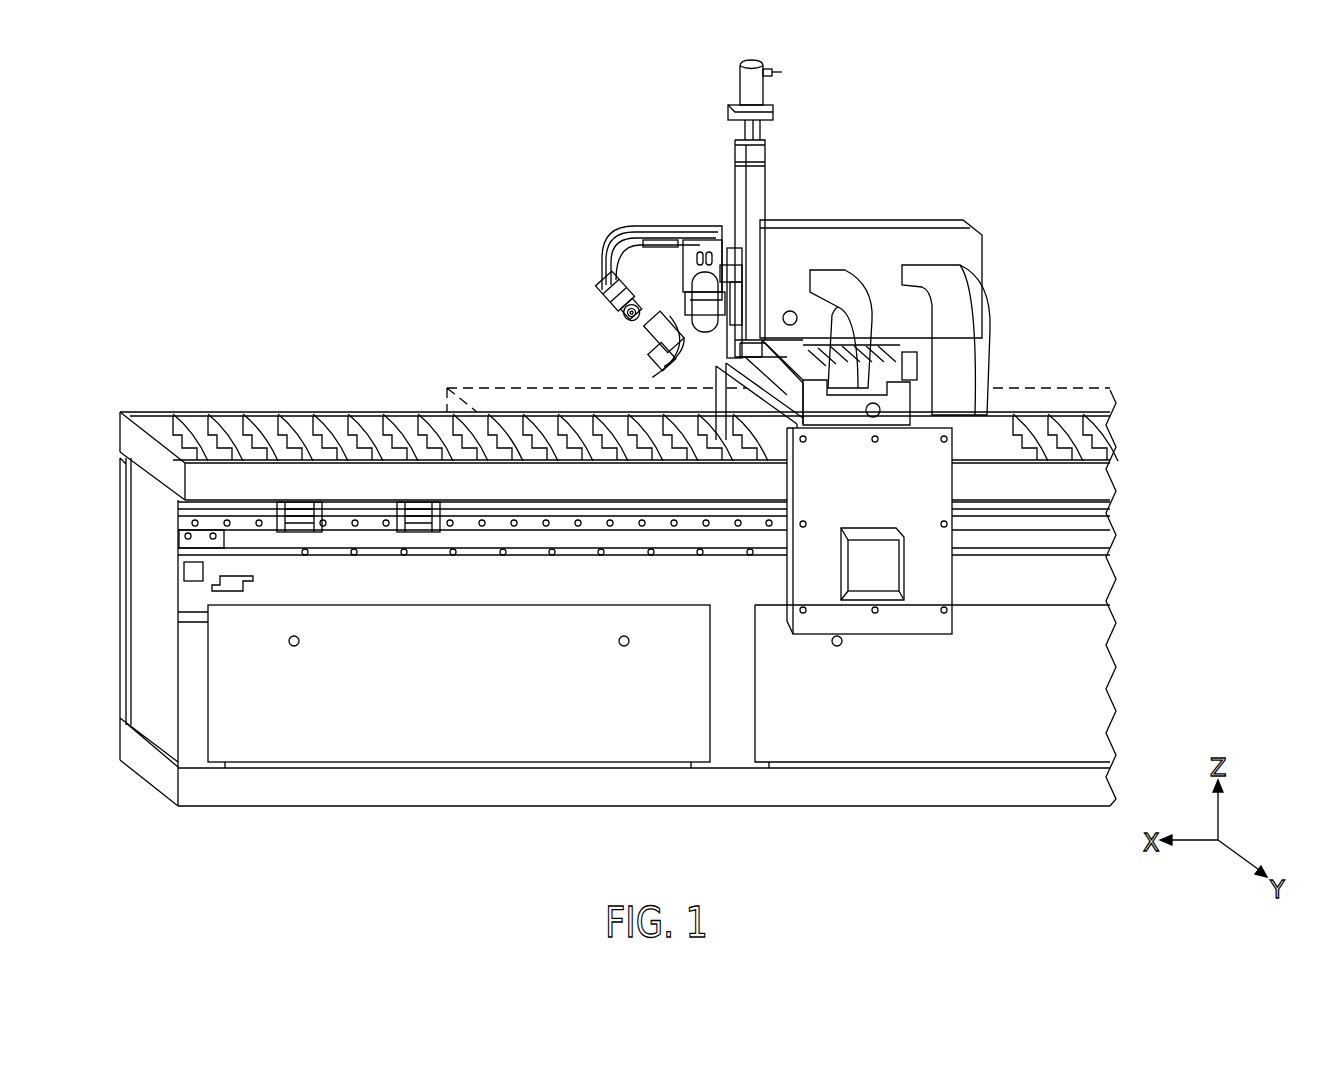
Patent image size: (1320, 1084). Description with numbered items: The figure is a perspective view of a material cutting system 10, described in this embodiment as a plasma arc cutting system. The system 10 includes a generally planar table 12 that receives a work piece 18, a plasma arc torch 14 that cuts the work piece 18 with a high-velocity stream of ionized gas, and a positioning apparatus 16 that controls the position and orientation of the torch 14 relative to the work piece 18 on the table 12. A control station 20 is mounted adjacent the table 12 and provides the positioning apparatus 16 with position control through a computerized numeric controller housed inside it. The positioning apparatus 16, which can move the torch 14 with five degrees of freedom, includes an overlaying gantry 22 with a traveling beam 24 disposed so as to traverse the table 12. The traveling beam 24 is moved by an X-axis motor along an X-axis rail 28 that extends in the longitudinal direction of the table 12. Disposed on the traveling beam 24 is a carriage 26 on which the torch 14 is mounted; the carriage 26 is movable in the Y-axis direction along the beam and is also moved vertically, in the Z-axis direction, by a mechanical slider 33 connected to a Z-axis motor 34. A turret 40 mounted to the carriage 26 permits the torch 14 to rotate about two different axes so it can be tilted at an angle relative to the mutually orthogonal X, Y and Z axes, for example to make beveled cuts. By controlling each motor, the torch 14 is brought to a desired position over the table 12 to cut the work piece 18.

The material cutting system 10 is at (942, 166).
The table 12 is at (193, 412).
The plasma arc torch 14 is at (685, 374).
The positioning apparatus 16 is at (824, 201).
The work piece 18 is at (447, 388).
The control station 20 is at (872, 552).
The gantry 22 is at (978, 228).
The traveling beam 24 is at (786, 478).
The carriage 26 is at (697, 240).
The X-axis rail 28 is at (278, 412).
The mechanical slider 33 is at (735, 170).
The Z-axis motor 34 is at (745, 87).
The turret 40 is at (602, 253).